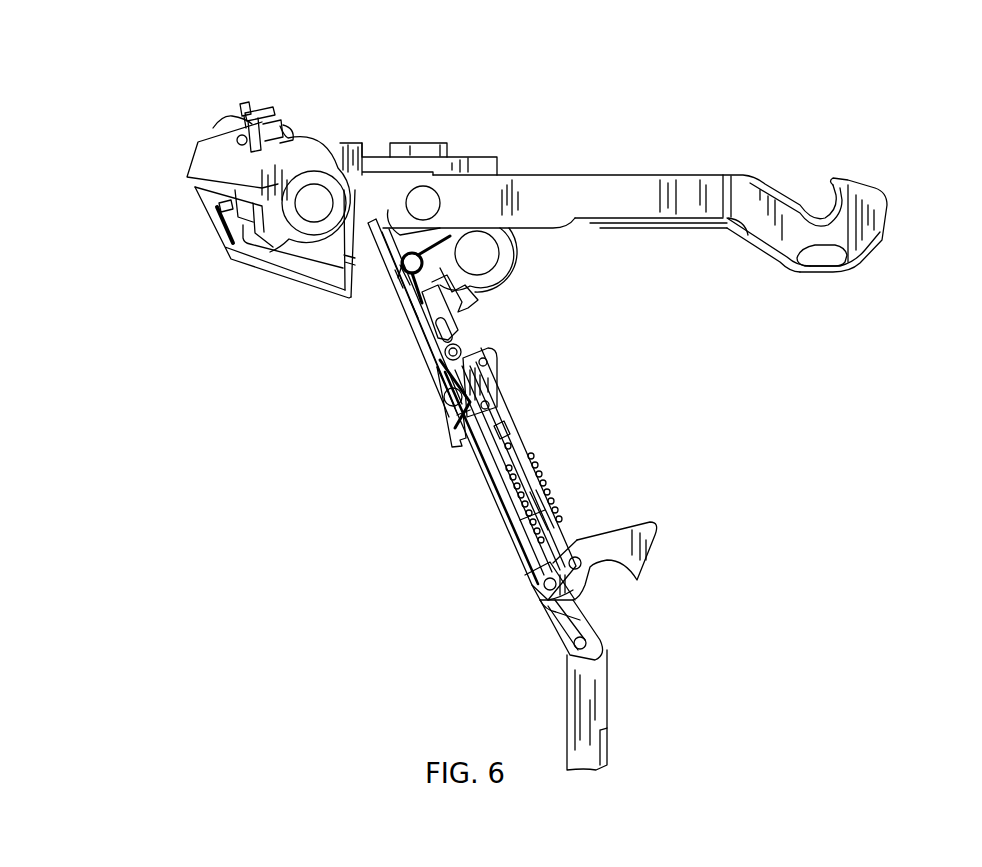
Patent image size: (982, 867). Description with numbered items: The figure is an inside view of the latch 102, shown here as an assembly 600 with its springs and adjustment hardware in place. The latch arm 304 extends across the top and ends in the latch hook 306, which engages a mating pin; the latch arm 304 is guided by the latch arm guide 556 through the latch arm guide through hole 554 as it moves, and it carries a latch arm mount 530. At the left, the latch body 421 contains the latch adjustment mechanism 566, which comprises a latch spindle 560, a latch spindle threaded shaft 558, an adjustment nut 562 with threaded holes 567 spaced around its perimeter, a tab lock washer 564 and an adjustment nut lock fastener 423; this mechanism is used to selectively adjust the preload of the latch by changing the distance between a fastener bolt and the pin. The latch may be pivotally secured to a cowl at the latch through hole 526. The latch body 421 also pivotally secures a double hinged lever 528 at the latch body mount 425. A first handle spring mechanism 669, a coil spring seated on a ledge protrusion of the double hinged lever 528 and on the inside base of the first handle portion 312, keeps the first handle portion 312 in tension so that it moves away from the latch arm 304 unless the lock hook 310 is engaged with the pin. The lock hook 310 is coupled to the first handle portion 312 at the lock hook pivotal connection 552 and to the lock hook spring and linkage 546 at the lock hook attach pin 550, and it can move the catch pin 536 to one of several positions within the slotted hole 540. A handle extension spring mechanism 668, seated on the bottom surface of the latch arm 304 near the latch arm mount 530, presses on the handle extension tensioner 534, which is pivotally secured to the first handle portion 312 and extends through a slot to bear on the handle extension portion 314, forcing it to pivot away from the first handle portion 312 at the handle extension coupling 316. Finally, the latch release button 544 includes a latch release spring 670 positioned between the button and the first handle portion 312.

The latch 102 is at (165, 74).
The end effector assembly 600 is at (822, 143).
The latch adjustment mechanism 566 is at (119, 80).
The latch arm 304 is at (680, 180).
The latch hook 306 is at (875, 208).
The latch arm guide through hole 554 is at (405, 143).
The latch arm guide 556 is at (470, 157).
The latch arm mount 530 is at (440, 200).
The latch body mount 425 is at (490, 255).
The double hinged lever 528 is at (505, 265).
The first handle spring mechanism 669 is at (500, 286).
The latch spindle 560 is at (313, 160).
The latch through hole 526 is at (305, 215).
The latch spindle threaded shaft 558 is at (197, 168).
The adjustment nut 562 is at (233, 142).
The tab lock washer 564 is at (241, 110).
The adjustment nut lock fastener 423 is at (265, 113).
The threaded holes 567 is at (205, 209).
The latch body 421 is at (233, 241).
The handle extension spring mechanism 668 is at (385, 298).
The handle extension tensioner 534 is at (422, 320).
The slotted hole 540 is at (447, 330).
The catch pin 536 is at (462, 349).
The latch release button 544 is at (492, 372).
The latch release spring 670 is at (445, 409).
The first handle portion 312 is at (497, 512).
The lock hook spring and linkage 546 is at (512, 400).
The lock hook attach pin 550 is at (585, 545).
The lock hook 310 is at (640, 543).
The lock hook pivotal connection 552 is at (545, 584).
The handle extension coupling 316 is at (590, 643).
The handle extension portion 314 is at (600, 690).